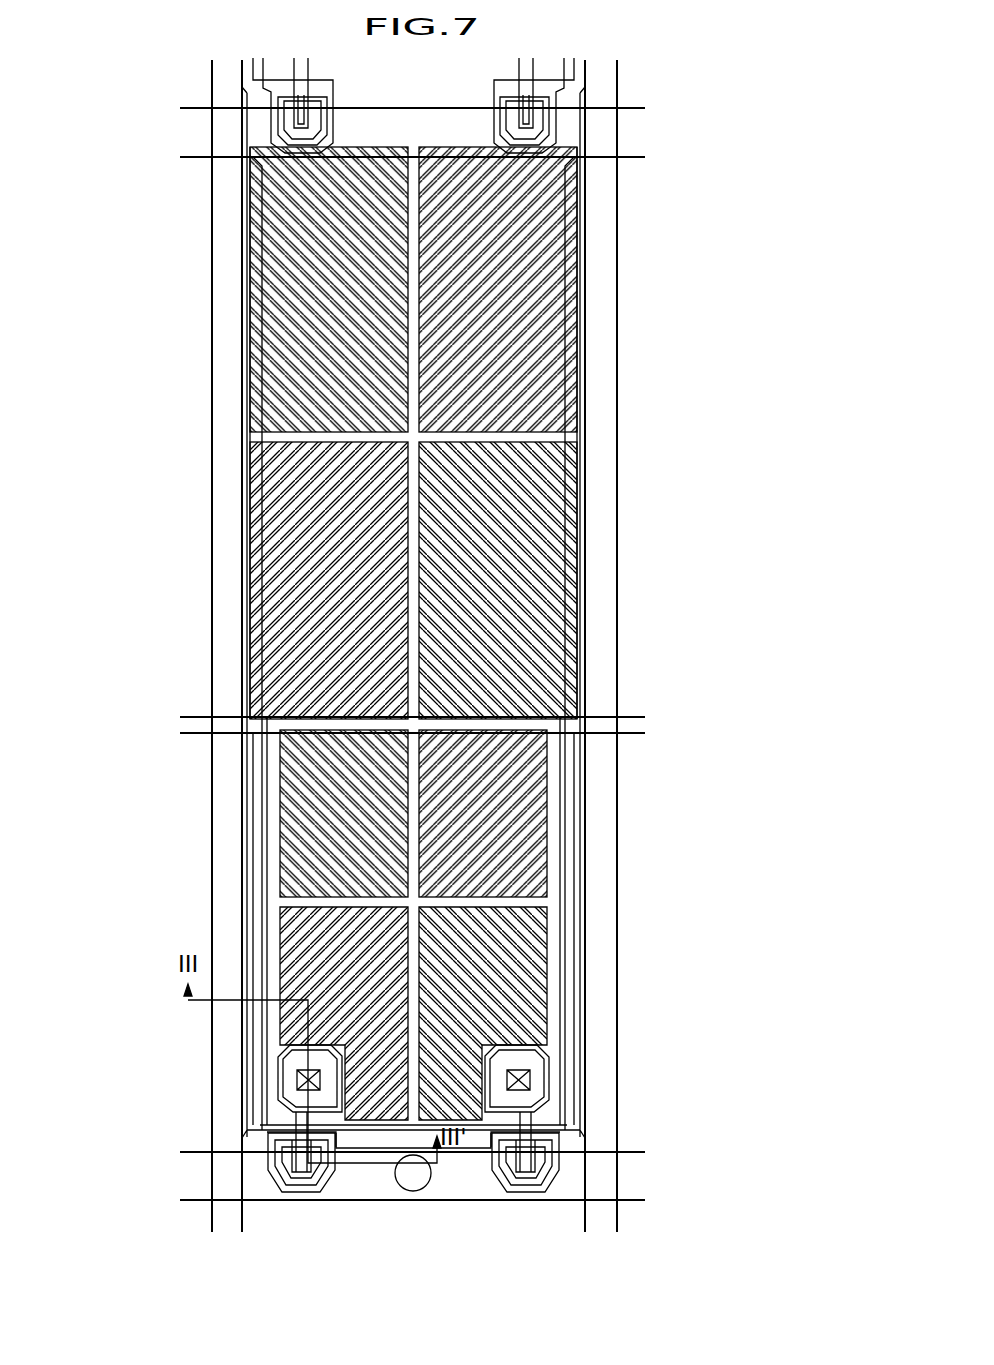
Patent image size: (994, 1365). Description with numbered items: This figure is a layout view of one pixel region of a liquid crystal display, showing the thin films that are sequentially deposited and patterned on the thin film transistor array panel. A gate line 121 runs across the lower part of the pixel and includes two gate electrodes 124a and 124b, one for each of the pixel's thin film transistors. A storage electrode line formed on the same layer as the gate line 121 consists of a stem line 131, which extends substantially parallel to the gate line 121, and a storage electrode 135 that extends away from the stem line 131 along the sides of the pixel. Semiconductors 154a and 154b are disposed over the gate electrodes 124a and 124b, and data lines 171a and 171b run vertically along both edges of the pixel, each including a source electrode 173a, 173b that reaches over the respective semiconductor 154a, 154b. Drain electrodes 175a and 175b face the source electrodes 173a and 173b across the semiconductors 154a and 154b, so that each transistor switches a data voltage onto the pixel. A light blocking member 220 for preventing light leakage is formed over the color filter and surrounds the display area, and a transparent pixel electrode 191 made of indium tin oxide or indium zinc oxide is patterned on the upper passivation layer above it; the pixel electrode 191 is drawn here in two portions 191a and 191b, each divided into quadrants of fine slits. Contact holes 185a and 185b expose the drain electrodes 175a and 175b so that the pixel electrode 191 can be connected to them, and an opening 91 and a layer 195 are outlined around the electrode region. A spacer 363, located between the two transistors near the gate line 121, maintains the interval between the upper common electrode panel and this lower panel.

The organic layer opening 91 is at (280, 807).
The gate line 121 is at (645, 1152).
The gate electrode 124a is at (473, 1150).
The gate electrode 124b is at (353, 1150).
The stem line 131 is at (600, 717).
The storage electrode 135 is at (267, 765).
The semiconductor 154a is at (553, 1195).
The semiconductor 154b is at (278, 1195).
The data line 171a is at (583, 935).
The data line 171b is at (263, 862).
The source electrode 173a is at (495, 1150).
The source electrode 173b is at (333, 1150).
The drain electrode 175a is at (528, 1118).
The drain electrode 175b is at (296, 1048).
The first contact hole 185a is at (535, 1080).
The second contact hole 185b is at (300, 1080).
The pixel electrode 191 is at (760, 568).
The first subpixel electrode 191a is at (540, 820).
The second subpixel electrode 191b is at (580, 418).
The capping layer 195 is at (268, 919).
The light blocking member 220 is at (250, 250).
The spacer 363 is at (413, 1193).